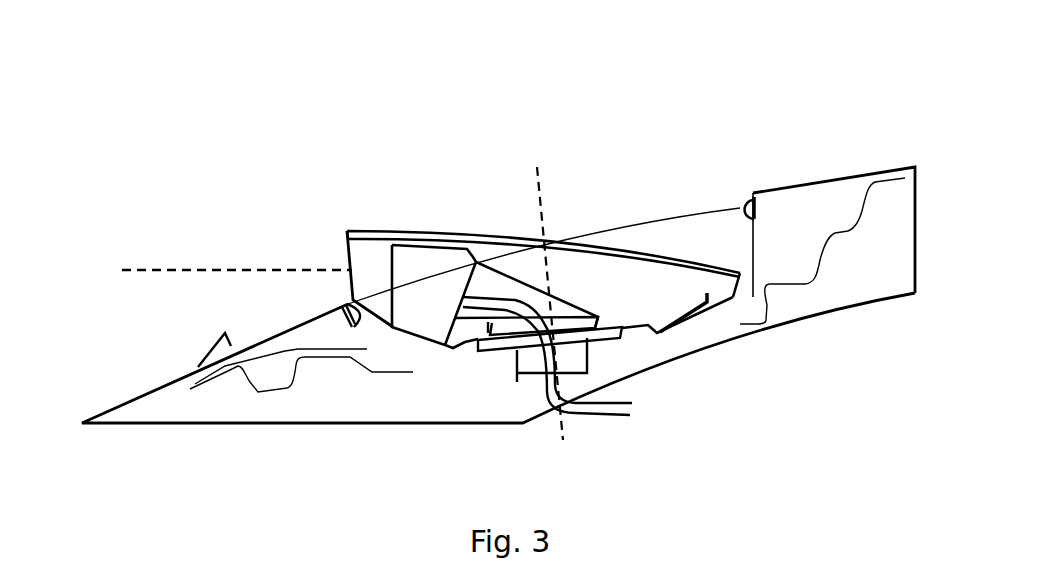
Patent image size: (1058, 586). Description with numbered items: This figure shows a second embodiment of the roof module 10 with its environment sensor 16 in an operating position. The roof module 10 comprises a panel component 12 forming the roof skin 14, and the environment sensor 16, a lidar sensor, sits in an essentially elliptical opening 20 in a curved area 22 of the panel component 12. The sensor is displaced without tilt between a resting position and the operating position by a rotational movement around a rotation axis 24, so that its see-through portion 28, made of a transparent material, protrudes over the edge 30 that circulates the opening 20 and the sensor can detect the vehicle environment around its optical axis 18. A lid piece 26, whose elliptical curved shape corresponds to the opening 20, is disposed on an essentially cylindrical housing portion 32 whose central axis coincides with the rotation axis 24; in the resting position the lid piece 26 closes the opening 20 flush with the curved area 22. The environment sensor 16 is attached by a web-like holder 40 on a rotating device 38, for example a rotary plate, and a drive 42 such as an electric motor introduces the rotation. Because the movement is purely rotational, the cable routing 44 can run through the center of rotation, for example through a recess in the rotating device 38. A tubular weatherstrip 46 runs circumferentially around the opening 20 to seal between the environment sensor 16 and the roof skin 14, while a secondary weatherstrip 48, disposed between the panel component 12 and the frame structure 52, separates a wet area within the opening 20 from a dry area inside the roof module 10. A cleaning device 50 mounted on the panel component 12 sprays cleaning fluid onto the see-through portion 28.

The roof module 10 is at (335, 141).
The panel component 12 is at (132, 397).
The roof skin 14 is at (858, 180).
The environment sensor 16 is at (435, 296).
The optical axis 18 is at (242, 270).
The opening 20 is at (698, 223).
The curved area 22 is at (778, 153).
The rotation axis 24 is at (542, 213).
The lid piece 26 is at (442, 232).
The see-through portion 28 is at (350, 268).
The edge 30 is at (620, 225).
The housing portion 32 is at (604, 297).
The rotating device 38 is at (588, 335).
The web-like holder 40 is at (503, 287).
The drive 42 is at (525, 363).
The cable routing 44 is at (598, 405).
The weatherstrip 46 is at (352, 325).
The secondary weatherstrip 48 is at (753, 247).
The cleaning device 50 is at (228, 340).
The frame structure 52 is at (248, 385).